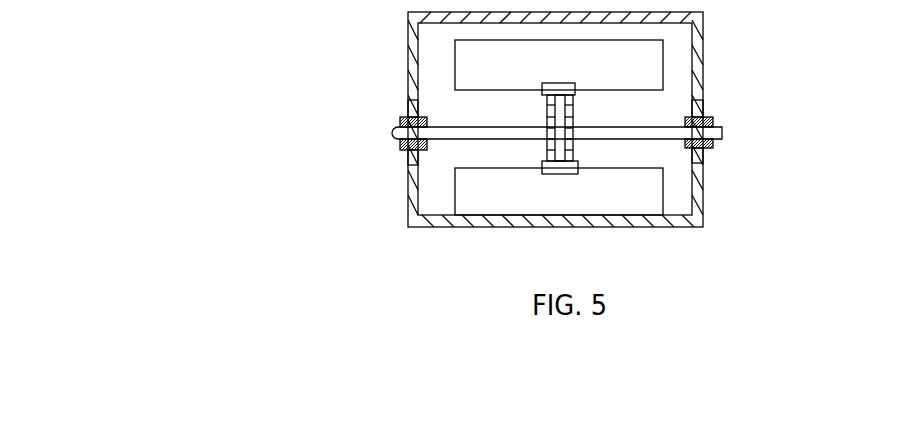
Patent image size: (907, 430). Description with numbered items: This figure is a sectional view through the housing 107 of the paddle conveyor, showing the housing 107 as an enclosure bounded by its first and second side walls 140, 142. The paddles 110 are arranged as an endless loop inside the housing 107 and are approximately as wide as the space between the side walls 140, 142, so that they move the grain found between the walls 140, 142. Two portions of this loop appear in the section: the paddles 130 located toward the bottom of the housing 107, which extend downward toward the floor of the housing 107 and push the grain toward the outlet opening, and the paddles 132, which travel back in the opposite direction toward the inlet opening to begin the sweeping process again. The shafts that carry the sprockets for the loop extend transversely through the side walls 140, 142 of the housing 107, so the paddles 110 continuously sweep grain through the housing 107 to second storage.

The housing 107 is at (408, 72).
The paddles 110 is at (625, 65).
The paddles 130 is at (615, 195).
The paddles 132 is at (617, 80).
The first side wall 140 is at (408, 95).
The second side wall 142 is at (703, 88).